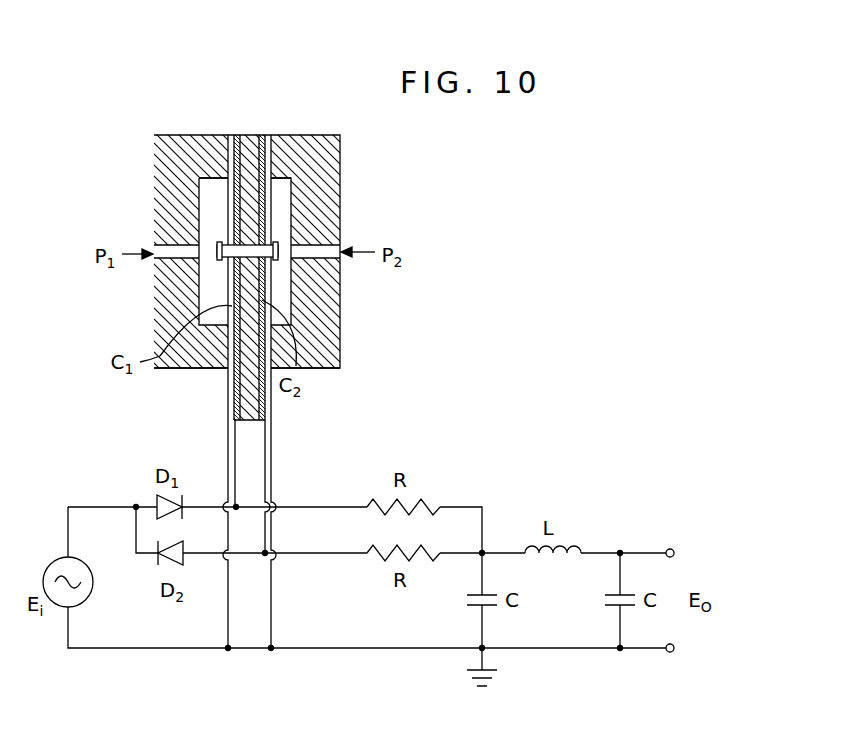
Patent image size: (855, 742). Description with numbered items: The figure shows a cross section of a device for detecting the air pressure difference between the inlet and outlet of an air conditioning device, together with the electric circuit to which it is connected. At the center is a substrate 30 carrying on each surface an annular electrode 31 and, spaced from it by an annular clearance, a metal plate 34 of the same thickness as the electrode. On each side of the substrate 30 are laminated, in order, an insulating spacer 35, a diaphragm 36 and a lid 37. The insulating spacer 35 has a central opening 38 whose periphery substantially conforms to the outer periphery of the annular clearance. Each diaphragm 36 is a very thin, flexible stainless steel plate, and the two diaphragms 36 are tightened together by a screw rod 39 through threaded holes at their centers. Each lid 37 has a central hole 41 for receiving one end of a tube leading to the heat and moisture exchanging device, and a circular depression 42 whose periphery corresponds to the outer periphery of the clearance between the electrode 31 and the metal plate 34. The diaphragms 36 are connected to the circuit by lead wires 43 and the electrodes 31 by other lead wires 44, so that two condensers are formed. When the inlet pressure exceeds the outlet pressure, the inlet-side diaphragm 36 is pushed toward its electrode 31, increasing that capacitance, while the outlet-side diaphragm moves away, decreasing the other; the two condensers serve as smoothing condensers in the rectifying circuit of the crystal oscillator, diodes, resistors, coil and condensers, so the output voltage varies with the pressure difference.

The substrate 30 is at (250, 410).
The annular electrode 31 is at (332, 350).
The metal plate 34 is at (232, 135).
The insulating spacer 35 is at (264, 135).
The diaphragm 36 is at (215, 228).
The lid 37 is at (167, 326).
The opening 38 is at (230, 188).
The screw rod 39 is at (268, 236).
The hole 41 is at (160, 260).
The circular depression 42 is at (222, 210).
The lead wire 43 is at (226, 424).
The lead wire 44 is at (236, 457).